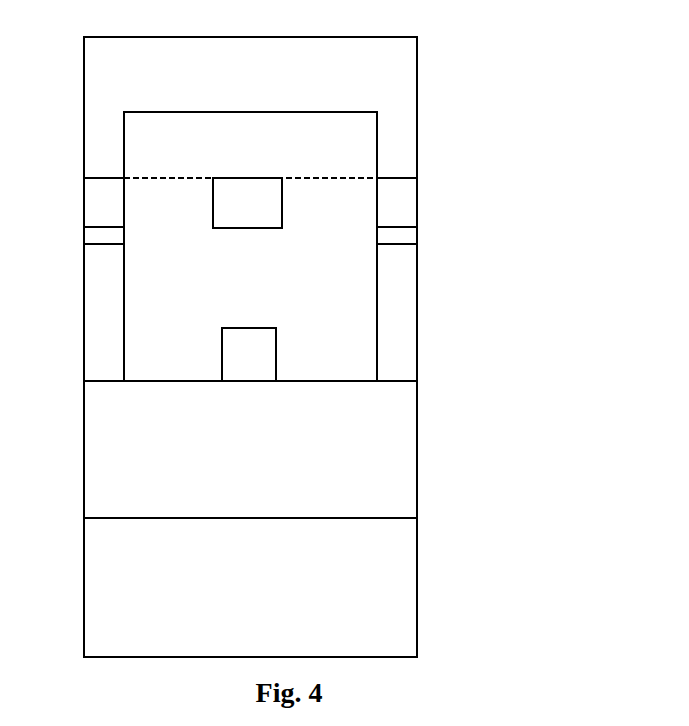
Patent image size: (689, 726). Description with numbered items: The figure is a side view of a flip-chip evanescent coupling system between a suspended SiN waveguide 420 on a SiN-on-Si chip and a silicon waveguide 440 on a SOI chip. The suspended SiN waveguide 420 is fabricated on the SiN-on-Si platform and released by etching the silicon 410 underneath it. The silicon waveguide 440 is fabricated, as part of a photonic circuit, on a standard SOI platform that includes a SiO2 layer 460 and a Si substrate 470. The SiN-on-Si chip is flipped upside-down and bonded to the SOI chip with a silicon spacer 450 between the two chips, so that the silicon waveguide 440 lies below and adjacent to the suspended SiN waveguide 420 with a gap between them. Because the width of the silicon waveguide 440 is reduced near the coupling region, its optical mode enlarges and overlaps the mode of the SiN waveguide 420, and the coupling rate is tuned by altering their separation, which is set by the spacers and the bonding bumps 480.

The silicon 410 is at (404, 68).
The suspended SiN waveguide 420 is at (235, 198).
The silicon waveguide 440 is at (404, 198).
The silicon spacer 450 is at (412, 331).
The SiO2 layer 460 is at (368, 457).
The Si substrate 470 is at (375, 591).
The bonding bumps 480 is at (105, 238).